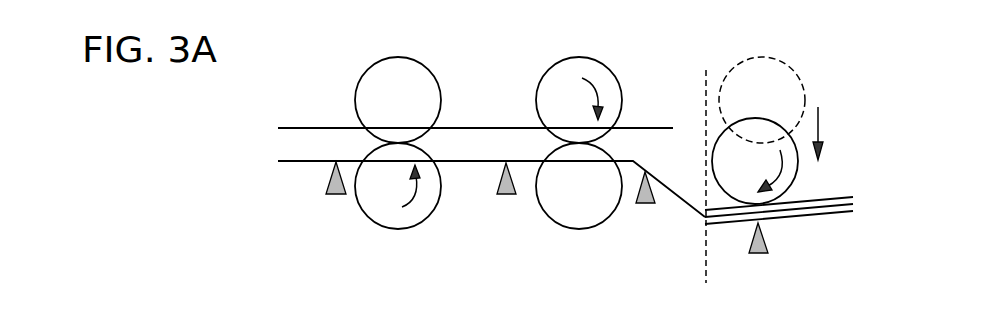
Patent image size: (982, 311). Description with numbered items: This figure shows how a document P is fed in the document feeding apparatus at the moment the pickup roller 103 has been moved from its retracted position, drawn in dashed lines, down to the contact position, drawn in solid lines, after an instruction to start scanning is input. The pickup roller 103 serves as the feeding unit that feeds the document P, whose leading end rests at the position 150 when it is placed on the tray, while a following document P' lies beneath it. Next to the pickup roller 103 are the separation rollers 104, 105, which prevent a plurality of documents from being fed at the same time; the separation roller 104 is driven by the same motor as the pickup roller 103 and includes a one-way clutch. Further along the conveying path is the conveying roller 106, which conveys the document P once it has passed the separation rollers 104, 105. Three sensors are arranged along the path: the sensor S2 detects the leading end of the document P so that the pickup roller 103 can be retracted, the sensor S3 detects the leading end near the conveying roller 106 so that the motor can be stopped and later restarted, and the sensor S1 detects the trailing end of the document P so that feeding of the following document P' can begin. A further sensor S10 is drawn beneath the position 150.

The pickup roller 103 is at (765, 72).
The separation roller 104 is at (572, 73).
The separation roller 105 is at (582, 210).
The conveying roller 106 is at (395, 75).
The position 150 is at (704, 95).
The sensor S1 is at (645, 205).
The sensor S2 is at (502, 197).
The sensor S3 is at (335, 197).
The sheet sensor S10 is at (757, 260).
The document P is at (782, 190).
The document P' is at (799, 234).